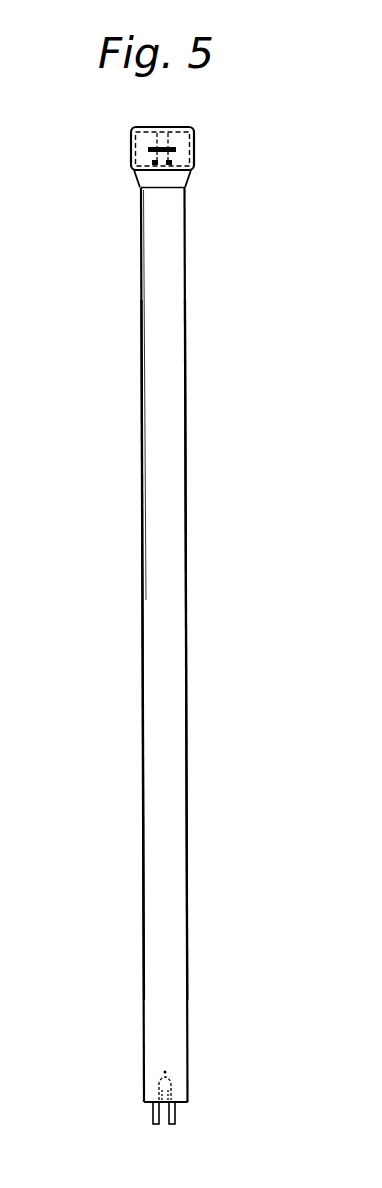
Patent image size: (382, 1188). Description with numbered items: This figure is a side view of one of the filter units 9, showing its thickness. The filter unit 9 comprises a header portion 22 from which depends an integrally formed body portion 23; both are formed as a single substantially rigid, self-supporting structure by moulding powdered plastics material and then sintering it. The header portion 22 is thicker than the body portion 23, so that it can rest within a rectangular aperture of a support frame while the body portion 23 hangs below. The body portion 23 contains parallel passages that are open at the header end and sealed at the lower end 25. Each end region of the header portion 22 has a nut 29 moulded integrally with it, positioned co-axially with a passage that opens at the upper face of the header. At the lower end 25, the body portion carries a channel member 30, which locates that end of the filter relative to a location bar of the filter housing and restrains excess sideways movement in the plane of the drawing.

The filter unit 9 is at (200, 349).
The header portion 22 is at (131, 156).
The body portion 23 is at (143, 554).
The lower end 25 is at (147, 1101).
The nut 29 is at (196, 160).
The channel member 30 is at (176, 1118).